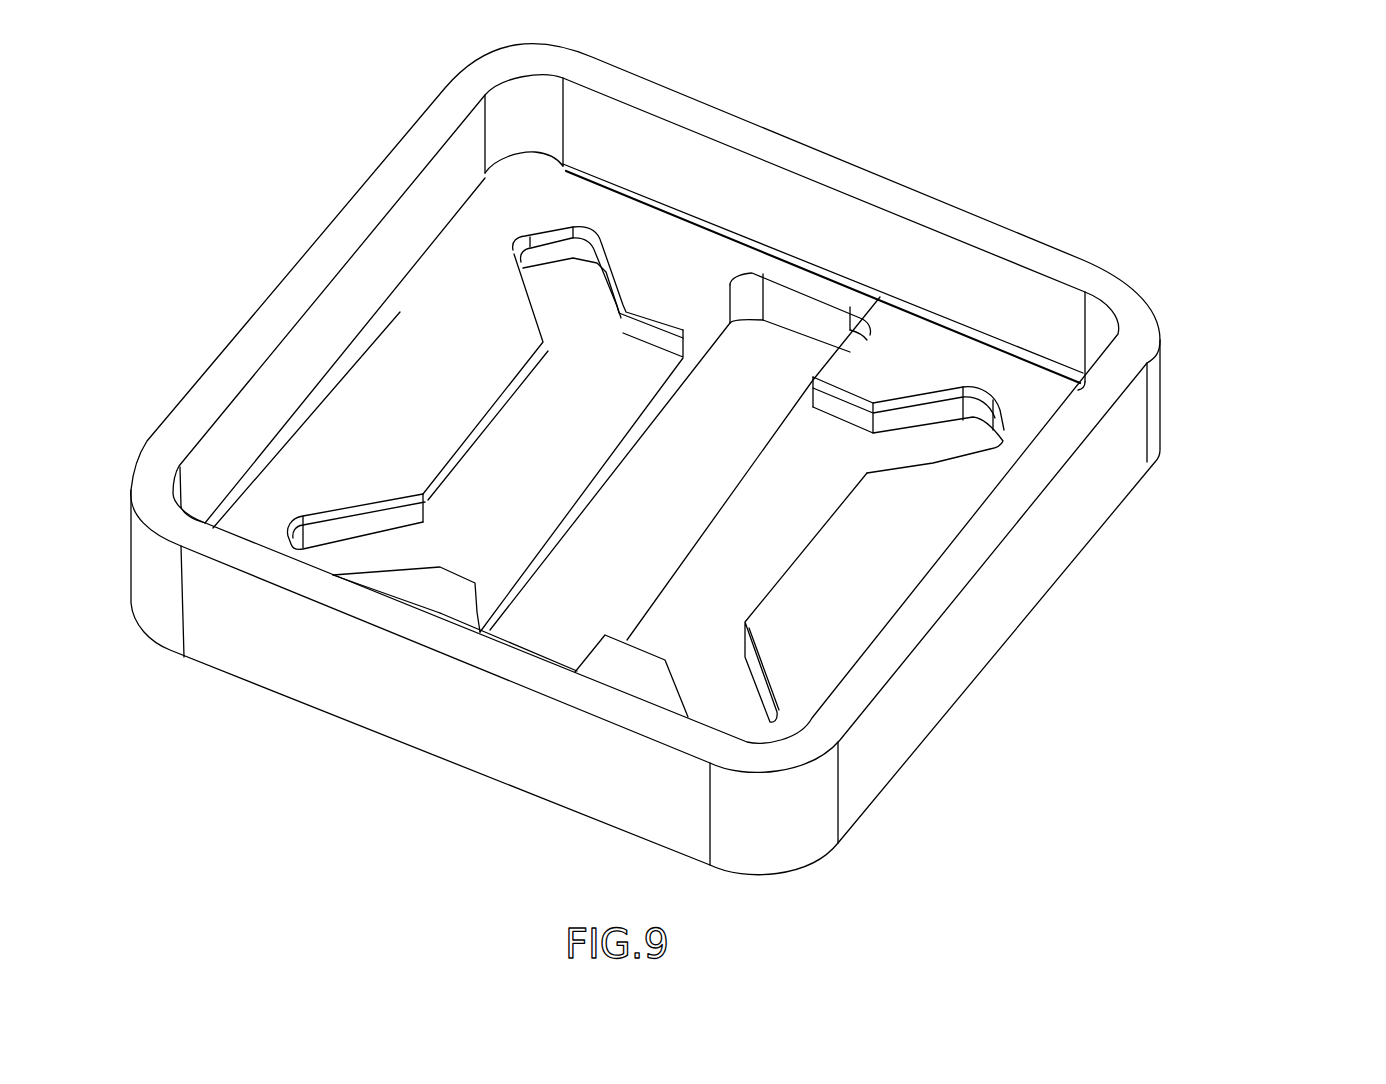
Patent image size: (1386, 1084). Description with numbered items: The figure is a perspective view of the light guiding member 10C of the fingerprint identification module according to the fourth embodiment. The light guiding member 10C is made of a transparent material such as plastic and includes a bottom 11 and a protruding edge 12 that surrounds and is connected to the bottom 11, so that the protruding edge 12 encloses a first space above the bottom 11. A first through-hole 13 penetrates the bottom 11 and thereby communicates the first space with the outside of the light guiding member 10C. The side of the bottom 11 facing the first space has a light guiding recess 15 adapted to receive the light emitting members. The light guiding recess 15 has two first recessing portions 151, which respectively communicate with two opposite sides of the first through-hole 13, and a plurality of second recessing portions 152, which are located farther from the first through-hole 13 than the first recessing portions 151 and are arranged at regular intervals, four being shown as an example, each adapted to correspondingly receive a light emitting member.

The light guiding member 10C is at (1126, 190).
The bottom 11 is at (873, 560).
The protruding edge 12 is at (1063, 433).
The first through-hole 13 is at (754, 368).
The light guiding recess 15 is at (822, 472).
The first recessing portion 151 is at (457, 553).
The second recessing portion 152 is at (333, 557).